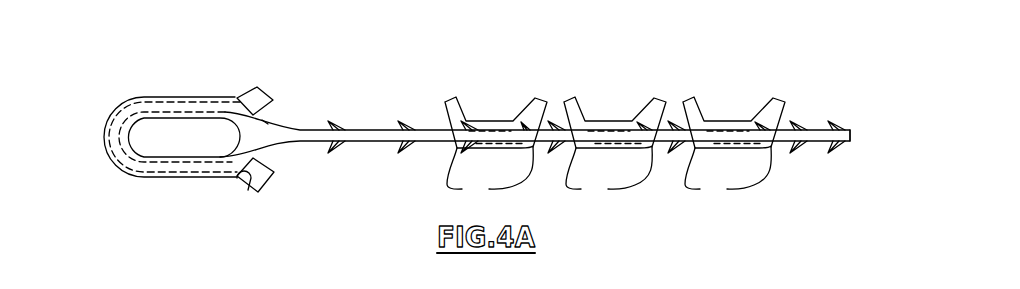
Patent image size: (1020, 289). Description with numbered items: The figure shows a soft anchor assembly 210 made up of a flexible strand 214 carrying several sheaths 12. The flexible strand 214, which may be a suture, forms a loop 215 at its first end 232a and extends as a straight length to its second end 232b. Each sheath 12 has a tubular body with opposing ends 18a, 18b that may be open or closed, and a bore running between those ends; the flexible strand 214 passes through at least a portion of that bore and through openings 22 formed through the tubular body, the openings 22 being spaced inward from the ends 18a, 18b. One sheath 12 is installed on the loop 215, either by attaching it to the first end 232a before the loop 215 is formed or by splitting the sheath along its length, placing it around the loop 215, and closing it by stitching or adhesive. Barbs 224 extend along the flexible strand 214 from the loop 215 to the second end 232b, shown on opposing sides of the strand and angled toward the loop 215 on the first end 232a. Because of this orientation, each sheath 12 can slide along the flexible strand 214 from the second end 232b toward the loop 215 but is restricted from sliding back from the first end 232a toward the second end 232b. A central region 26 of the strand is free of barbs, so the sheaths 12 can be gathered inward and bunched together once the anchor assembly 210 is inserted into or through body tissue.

The sheath 12 is at (462, 109).
The opposing end 18a is at (264, 187).
The opposing end 18b is at (258, 86).
The opening 22 is at (609, 173).
The central region 26 is at (248, 182).
The soft anchor assembly 210 is at (540, 56).
The flexible strand 214 is at (343, 106).
The loop 215 is at (268, 117).
The barbs 224 is at (333, 154).
The first end 232a is at (118, 176).
The second end 232b is at (850, 140).